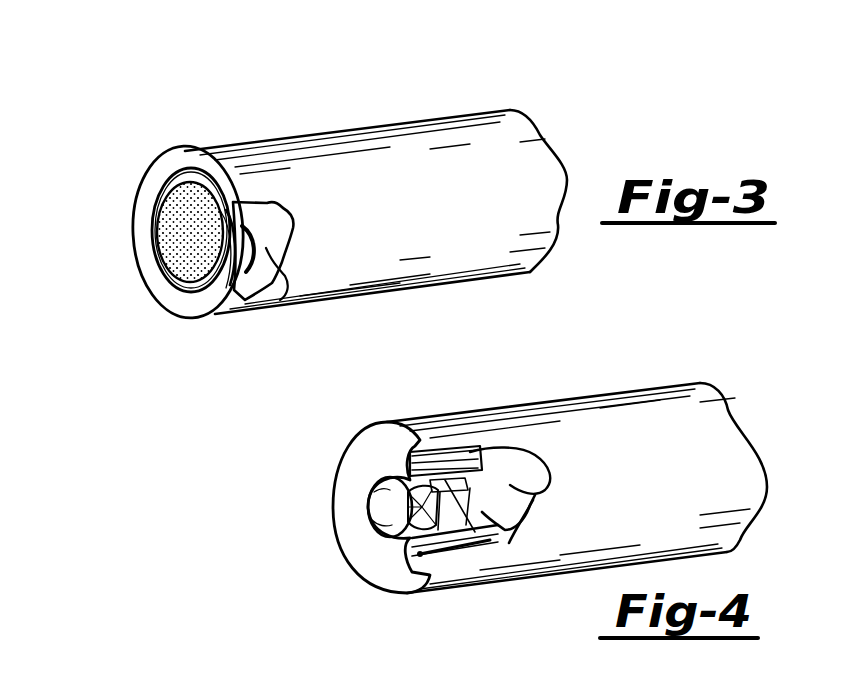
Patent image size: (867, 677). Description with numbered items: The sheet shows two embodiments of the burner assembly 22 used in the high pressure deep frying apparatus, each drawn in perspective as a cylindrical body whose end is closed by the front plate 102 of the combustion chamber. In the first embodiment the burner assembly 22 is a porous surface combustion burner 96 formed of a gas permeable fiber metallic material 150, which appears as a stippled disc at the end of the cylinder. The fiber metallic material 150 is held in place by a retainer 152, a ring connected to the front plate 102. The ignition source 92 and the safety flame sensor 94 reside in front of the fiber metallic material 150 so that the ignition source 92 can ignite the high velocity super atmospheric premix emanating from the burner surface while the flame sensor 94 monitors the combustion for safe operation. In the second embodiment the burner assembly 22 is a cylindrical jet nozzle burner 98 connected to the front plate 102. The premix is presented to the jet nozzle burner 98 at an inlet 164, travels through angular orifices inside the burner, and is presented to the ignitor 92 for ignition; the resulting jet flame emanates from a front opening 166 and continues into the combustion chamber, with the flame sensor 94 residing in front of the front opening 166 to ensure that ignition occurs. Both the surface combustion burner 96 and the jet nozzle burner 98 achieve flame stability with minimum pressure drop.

In FIG. 3, the burner assembly 22 is at (374, 112).
In FIG. 4, the burner assembly 22 is at (642, 373).
In FIG. 3, the ignition source 92 is at (225, 295).
In FIG. 4, the ignition source 92 is at (500, 478).
In FIG. 3, the safety flame sensor 94 is at (268, 285).
In FIG. 4, the safety flame sensor 94 is at (522, 522).
In FIG. 3, the surface combustion burner 96 is at (136, 276).
In FIG. 4, the jet nozzle burner 98 is at (440, 452).
In FIG. 3, the front plate 102 is at (180, 298).
In FIG. 4, the front plate 102 is at (383, 563).
In FIG. 3, the fiber metallic material 150 is at (150, 215).
In FIG. 3, the retainer 152 is at (187, 178).
In FIG. 4, the inlet 164 is at (368, 508).
In FIG. 4, the front opening 166 is at (480, 495).